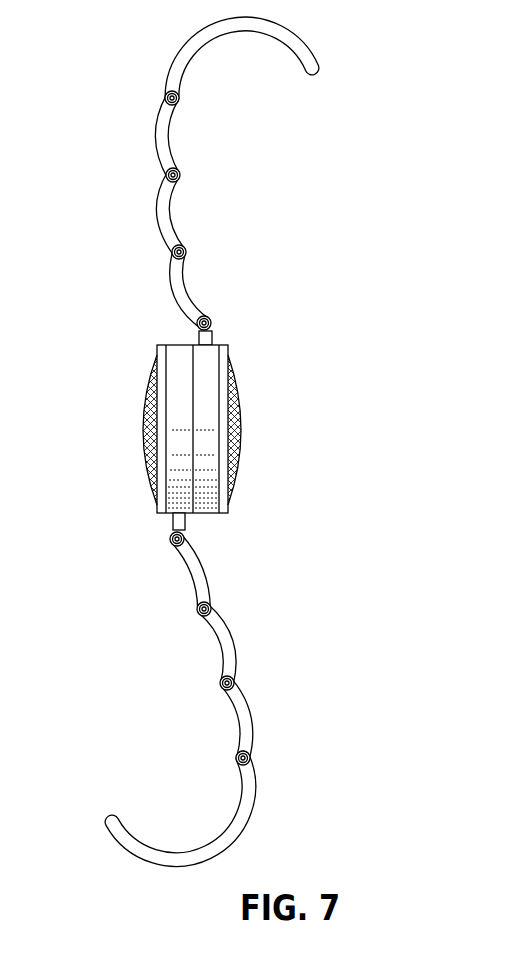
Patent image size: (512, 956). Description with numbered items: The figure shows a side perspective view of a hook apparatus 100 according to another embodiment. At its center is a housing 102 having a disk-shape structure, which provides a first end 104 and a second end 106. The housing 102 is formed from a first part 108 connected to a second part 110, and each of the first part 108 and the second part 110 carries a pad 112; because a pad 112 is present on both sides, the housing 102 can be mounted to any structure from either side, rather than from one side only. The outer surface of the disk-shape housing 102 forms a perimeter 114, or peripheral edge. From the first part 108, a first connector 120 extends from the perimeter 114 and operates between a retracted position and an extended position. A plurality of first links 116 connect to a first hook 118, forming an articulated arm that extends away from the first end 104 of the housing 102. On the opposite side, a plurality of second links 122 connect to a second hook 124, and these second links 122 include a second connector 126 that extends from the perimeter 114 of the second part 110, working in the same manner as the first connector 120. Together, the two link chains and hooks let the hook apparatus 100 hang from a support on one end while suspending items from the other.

The hook apparatus 100 is at (412, 130).
The housing 102 is at (150, 462).
The first end 104 is at (96, 425).
The second end 106 is at (294, 436).
The first part 108 is at (178, 355).
The second part 110 is at (233, 490).
The pad 112 is at (243, 428).
The perimeter 114 is at (149, 385).
The plurality of first links 116 is at (228, 645).
The first hook 118 is at (176, 848).
The first connector 120 is at (172, 523).
The plurality of second links 122 is at (165, 220).
The second hook 124 is at (245, 32).
The second connector 126 is at (213, 340).